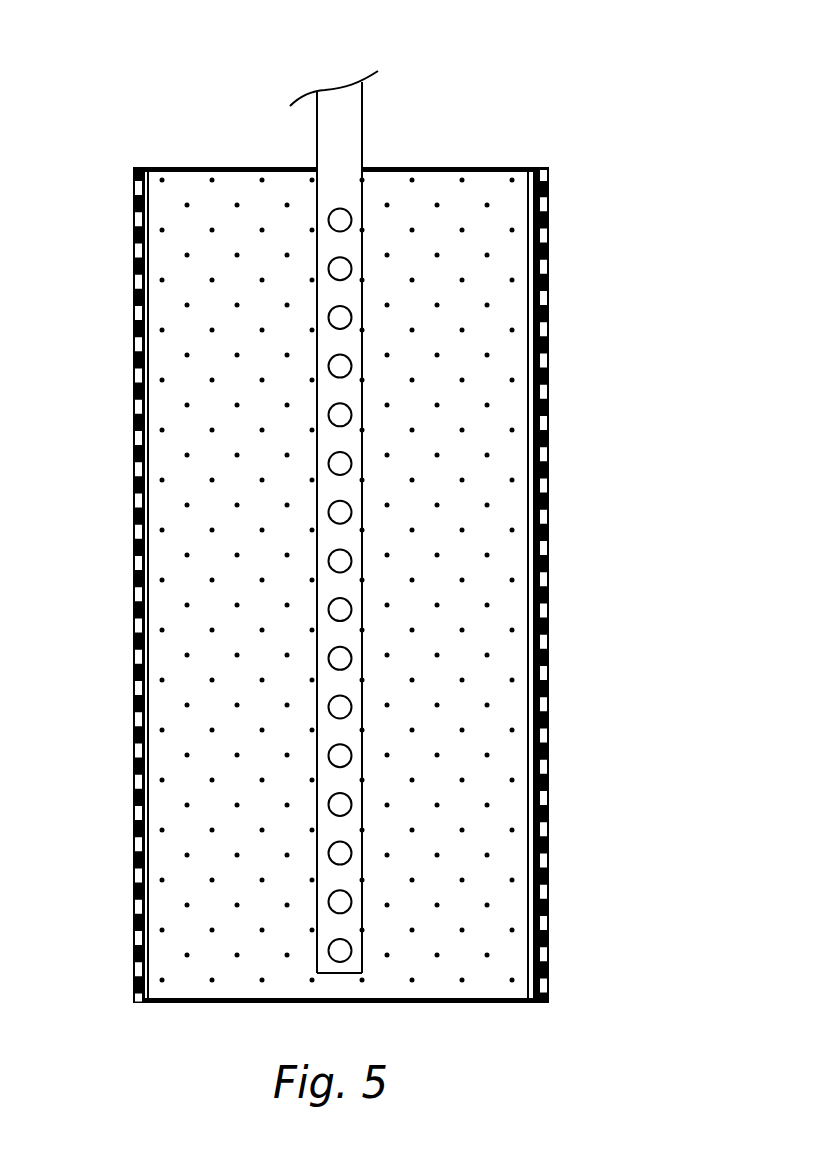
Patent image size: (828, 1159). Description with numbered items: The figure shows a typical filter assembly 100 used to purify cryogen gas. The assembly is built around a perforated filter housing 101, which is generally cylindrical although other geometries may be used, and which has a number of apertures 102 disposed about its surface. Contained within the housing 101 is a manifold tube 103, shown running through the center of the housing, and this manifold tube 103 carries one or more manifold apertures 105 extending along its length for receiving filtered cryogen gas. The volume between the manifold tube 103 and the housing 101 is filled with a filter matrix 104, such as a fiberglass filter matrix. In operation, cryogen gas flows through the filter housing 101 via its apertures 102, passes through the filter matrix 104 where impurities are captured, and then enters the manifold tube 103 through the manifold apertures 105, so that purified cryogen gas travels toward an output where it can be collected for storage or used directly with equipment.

The filter assembly 100 is at (206, 89).
The perforated filter housing 101 is at (137, 432).
The apertures 102 is at (135, 541).
The manifold tube 103 is at (362, 136).
The filter matrix 104 is at (513, 617).
The manifold apertures 105 is at (338, 950).